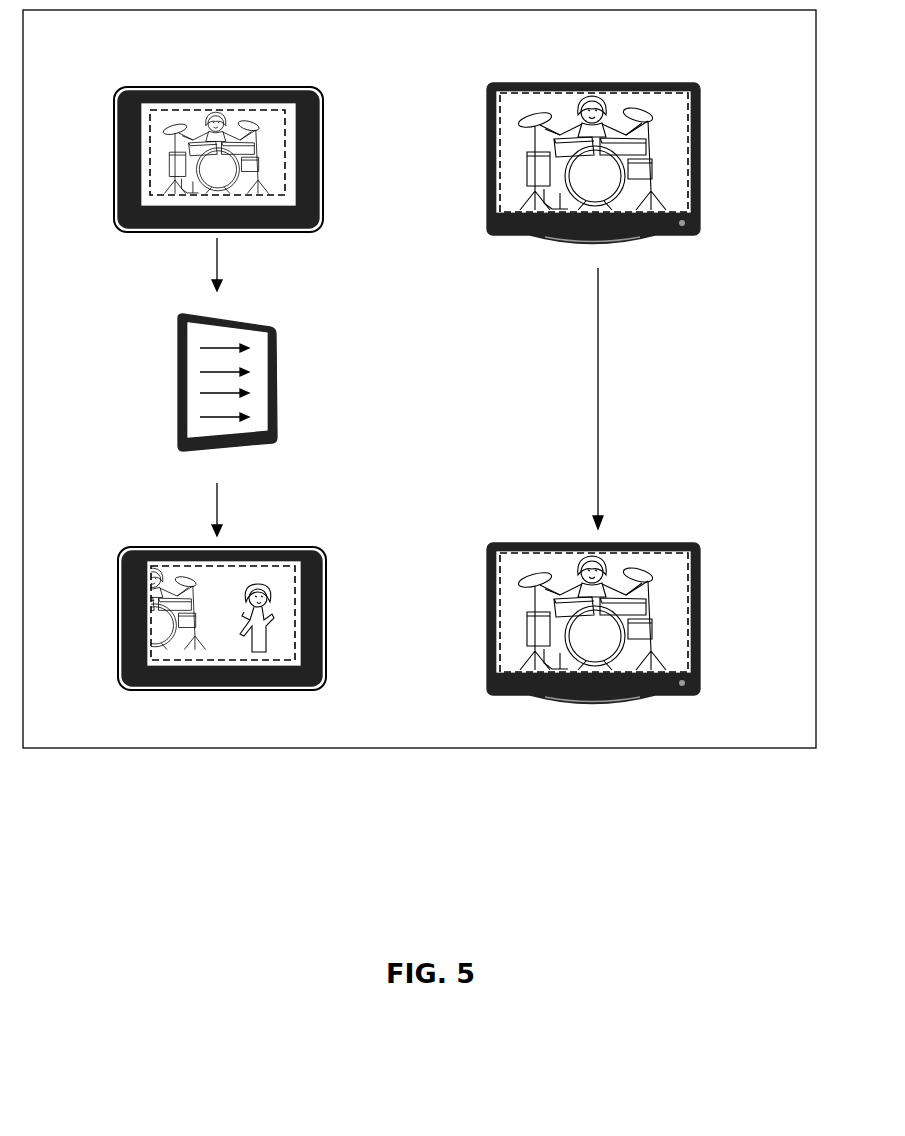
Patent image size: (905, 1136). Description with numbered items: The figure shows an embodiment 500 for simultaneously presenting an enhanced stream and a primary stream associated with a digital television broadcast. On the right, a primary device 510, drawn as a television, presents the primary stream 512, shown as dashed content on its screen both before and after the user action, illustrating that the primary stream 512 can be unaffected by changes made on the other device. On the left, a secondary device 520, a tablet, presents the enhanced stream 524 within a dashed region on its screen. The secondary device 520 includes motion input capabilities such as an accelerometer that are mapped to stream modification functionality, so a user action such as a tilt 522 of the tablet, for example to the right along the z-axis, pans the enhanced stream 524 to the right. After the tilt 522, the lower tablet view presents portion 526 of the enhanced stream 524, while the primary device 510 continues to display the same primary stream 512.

The embodiment 500 is at (771, 39).
The primary device 510 is at (700, 118).
The primary stream 512 is at (688, 150).
The secondary device 520 is at (322, 138).
The tilt 522 is at (231, 387).
The enhanced stream 524 is at (287, 167).
The portion of stream 526 is at (295, 616).